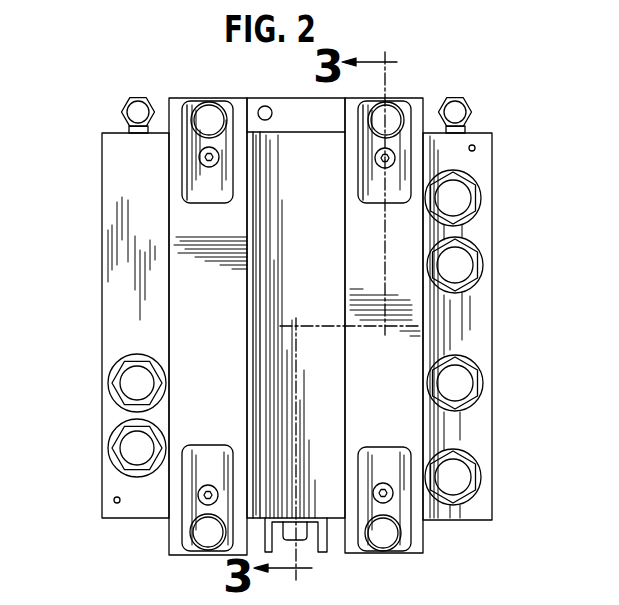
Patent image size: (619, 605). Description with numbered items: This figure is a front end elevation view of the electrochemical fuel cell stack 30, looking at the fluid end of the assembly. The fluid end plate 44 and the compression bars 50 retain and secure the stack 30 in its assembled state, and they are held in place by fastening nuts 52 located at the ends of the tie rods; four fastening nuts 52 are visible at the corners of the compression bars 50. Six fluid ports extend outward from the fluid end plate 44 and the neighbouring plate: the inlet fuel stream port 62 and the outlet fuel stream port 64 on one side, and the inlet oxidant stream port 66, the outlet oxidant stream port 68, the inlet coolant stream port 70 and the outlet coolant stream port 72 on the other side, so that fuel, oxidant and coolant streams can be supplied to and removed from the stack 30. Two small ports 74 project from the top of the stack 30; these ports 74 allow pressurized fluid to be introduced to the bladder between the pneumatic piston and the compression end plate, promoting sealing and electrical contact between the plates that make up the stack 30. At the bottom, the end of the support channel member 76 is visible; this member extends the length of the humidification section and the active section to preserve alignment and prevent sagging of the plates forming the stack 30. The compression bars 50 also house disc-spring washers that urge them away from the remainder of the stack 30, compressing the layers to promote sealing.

The electrochemical fuel cell stack 30 is at (472, 536).
The fluid end plate 44 is at (486, 144).
The compression bars 50 is at (355, 215).
The fastening nuts 52 is at (378, 120).
The inlet fuel stream port 62 is at (127, 382).
The outlet fuel stream port 64 is at (130, 448).
The inlet oxidant stream port 66 is at (470, 383).
The outlet oxidant stream port 68 is at (468, 477).
The inlet coolant stream port 70 is at (467, 197).
The outlet coolant stream port 72 is at (472, 265).
The ports 74 is at (138, 108).
The support channel member 76 is at (322, 552).